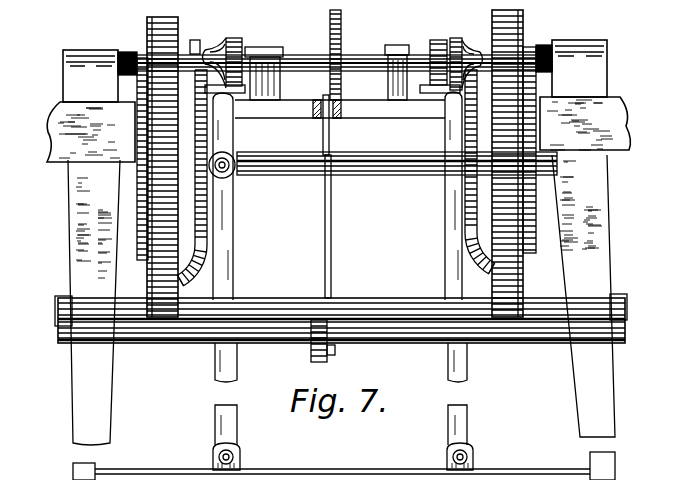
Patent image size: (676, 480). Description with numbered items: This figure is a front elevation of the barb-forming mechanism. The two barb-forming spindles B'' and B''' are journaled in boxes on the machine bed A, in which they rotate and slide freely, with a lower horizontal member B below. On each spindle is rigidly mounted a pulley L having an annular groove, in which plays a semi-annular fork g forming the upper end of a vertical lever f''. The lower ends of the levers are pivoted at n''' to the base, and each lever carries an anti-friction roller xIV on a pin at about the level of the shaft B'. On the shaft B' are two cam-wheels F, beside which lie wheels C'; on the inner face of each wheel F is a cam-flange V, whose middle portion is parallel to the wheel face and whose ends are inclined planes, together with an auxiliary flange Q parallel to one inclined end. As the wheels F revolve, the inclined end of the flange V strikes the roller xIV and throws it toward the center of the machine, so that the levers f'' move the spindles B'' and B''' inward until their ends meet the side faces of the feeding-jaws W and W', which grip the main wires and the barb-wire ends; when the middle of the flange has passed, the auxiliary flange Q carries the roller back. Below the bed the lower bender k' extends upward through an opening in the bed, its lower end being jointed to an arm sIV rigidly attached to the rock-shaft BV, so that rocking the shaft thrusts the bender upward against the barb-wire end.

The frame A is at (338, 260).
The lower horizontal beam B is at (341, 311).
The shaft B' is at (397, 153).
The barb-forming spindle B'' is at (335, 49).
The barb-forming spindle B''' is at (327, 64).
The rock-shaft BV is at (370, 334).
The spur gear C' is at (331, 143).
The cam-wheel F is at (335, 163).
The pulley L is at (343, 54).
The auxiliary flange Q is at (213, 49).
The feeding-jaw W is at (345, 54).
The feeding-jaw W' is at (339, 117).
The cam-flange V is at (203, 226).
The vertical lever f'' is at (335, 196).
The semi-annular fork g is at (235, 90).
The lower bender k' is at (338, 226).
The anti-friction roller xIV is at (230, 160).
The arm sIV is at (316, 342).
The pivot n''' is at (357, 456).